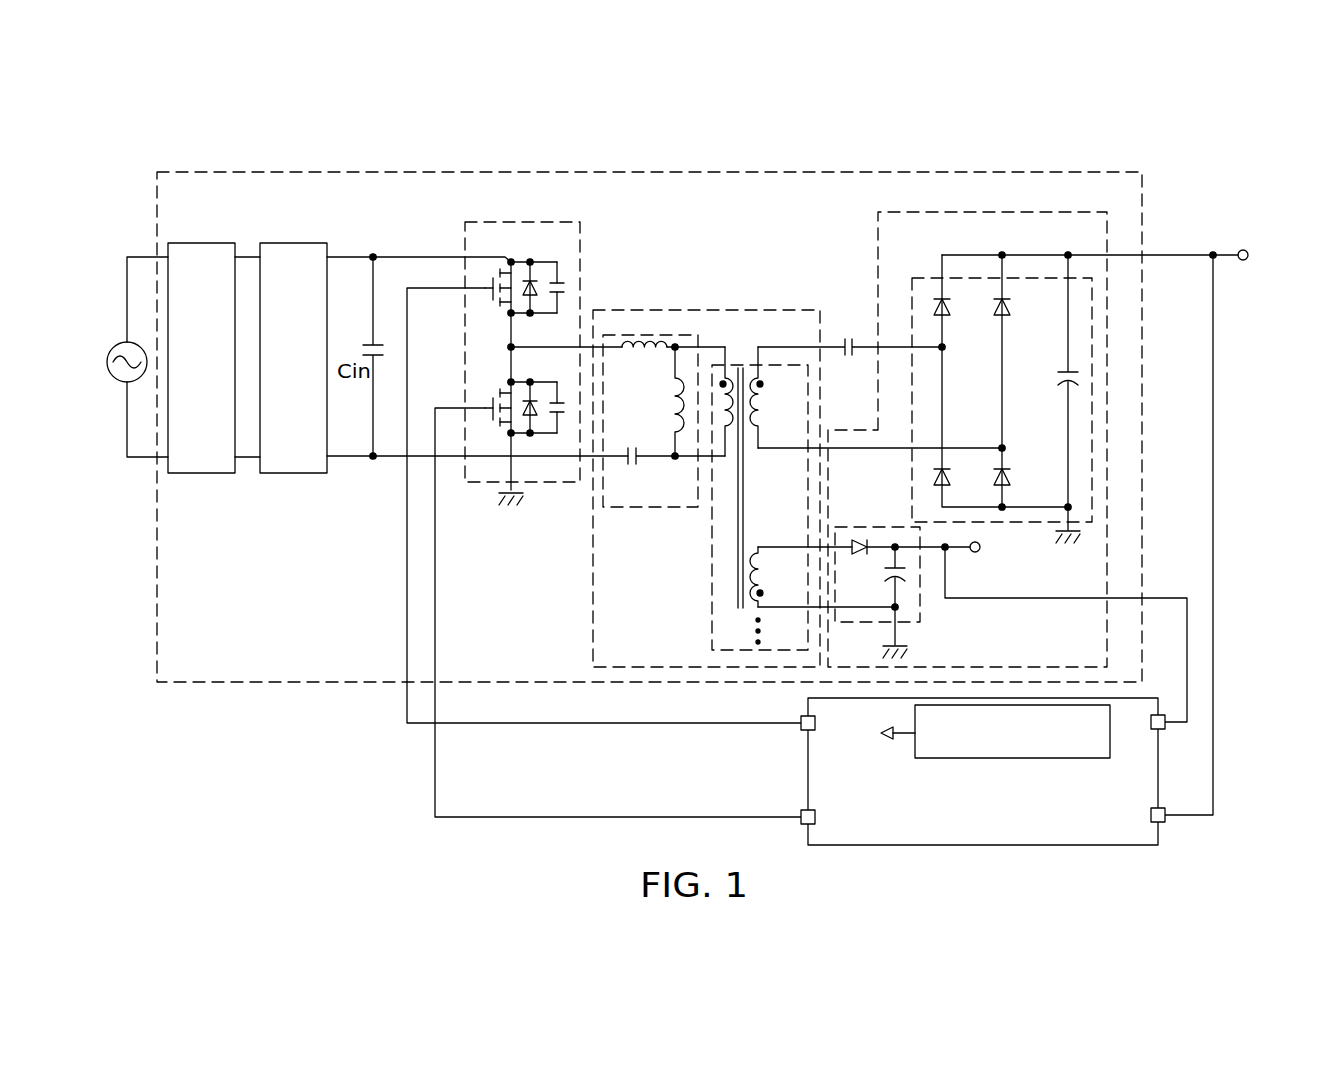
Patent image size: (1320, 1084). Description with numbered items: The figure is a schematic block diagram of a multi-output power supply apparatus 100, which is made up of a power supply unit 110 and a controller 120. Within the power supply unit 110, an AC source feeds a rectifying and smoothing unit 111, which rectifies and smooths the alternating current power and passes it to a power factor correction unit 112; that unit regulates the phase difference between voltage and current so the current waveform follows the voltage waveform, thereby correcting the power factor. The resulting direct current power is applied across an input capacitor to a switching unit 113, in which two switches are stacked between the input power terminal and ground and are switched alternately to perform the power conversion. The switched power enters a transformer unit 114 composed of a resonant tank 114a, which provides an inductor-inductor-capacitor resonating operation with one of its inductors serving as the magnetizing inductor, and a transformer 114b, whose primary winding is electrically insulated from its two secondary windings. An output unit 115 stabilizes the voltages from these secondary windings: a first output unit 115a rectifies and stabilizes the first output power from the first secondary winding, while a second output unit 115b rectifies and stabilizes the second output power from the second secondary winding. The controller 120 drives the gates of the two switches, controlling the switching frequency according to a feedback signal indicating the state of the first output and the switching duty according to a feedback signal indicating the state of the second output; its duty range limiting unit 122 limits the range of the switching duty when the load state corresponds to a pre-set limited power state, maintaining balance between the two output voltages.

The multi-output power supply apparatus 100 is at (1174, 131).
The power supply unit 110 is at (222, 683).
The rectifying and smoothing unit 111 is at (203, 474).
The power factor correction unit 112 is at (290, 474).
The switching unit 113 is at (478, 483).
The transformer unit 114 is at (718, 310).
The resonant tank 114a is at (655, 508).
The transformer 114b is at (712, 597).
The output unit 115 is at (878, 265).
The first output unit 115a is at (924, 278).
The second output unit 115b is at (868, 527).
The controller 120 is at (808, 768).
The duty range limiting unit 122 is at (1078, 760).